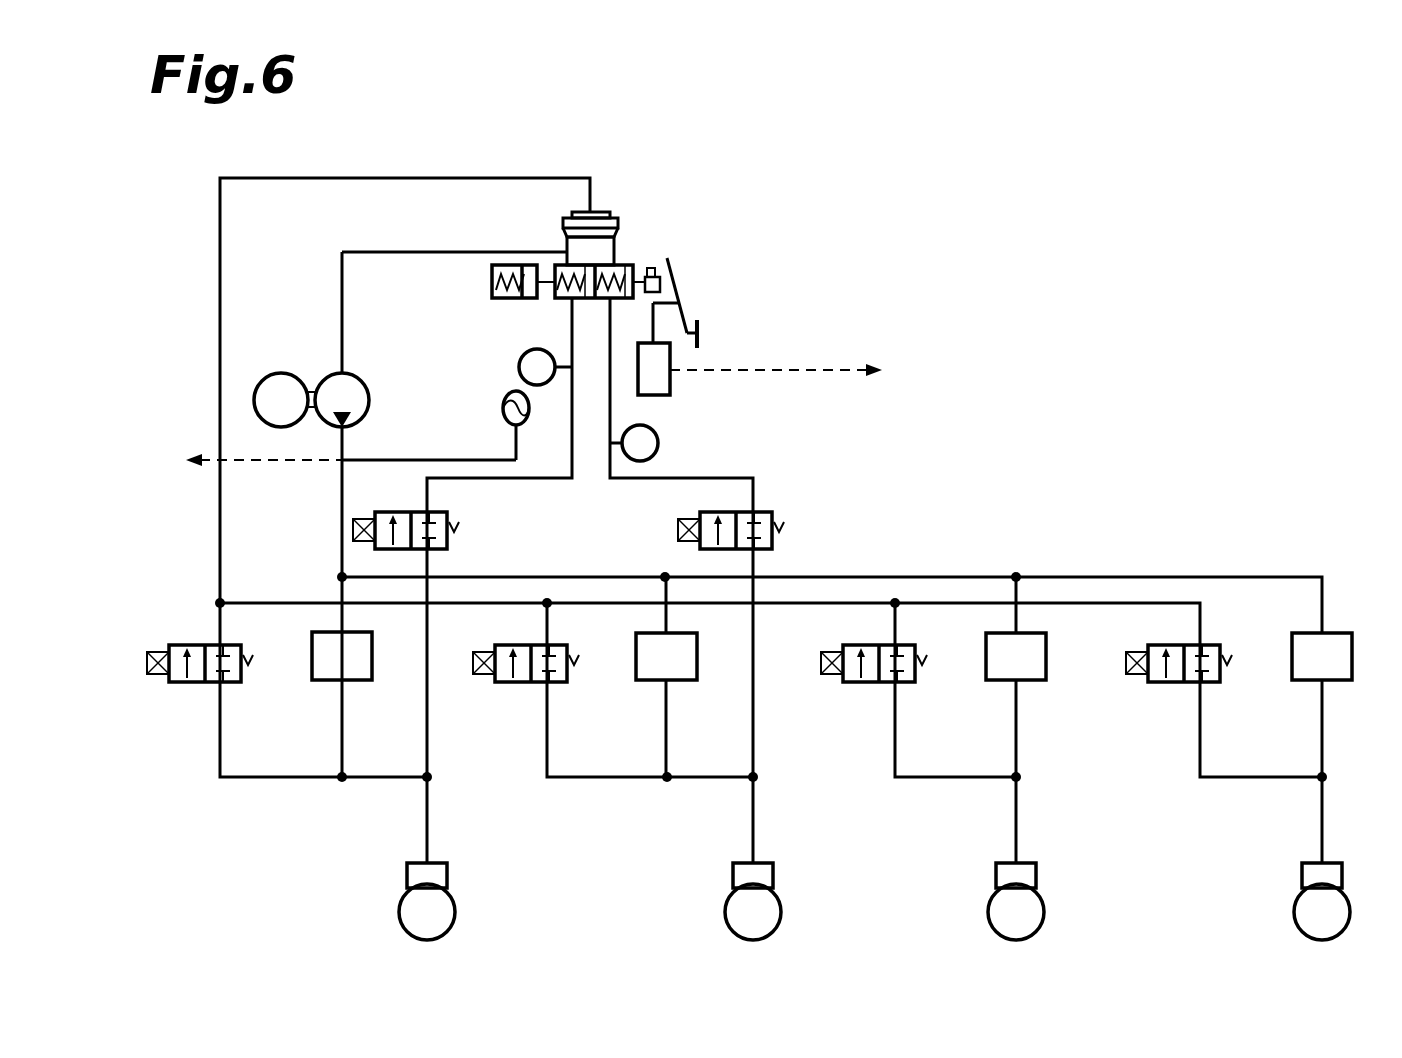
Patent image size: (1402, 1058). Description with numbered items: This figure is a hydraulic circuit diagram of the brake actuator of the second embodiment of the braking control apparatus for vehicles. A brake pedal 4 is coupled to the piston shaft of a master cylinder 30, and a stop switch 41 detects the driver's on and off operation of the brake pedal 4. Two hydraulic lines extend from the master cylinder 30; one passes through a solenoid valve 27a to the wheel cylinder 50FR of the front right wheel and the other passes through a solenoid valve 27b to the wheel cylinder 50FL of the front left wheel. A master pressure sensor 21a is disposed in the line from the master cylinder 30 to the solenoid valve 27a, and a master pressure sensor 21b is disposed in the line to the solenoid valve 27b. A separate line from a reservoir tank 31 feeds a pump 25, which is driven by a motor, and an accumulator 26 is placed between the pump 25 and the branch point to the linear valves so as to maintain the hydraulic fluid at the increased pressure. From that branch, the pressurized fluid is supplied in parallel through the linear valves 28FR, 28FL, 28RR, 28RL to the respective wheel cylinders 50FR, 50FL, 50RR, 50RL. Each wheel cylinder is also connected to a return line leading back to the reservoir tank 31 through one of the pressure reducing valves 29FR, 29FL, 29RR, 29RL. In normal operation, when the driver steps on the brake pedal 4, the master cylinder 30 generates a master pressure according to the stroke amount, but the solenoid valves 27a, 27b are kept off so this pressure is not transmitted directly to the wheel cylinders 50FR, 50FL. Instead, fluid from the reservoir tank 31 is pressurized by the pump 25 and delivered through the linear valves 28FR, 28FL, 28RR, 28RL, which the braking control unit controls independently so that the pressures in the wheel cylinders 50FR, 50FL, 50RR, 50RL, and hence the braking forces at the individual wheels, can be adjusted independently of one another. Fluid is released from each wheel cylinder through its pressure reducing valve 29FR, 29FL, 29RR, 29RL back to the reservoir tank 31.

The brake pedal 4 is at (677, 292).
The master pressure sensor 21a is at (519, 364).
The master pressure sensor 21b is at (658, 443).
The pump 25 is at (314, 390).
The accumulator 26 is at (502, 410).
The solenoid valve 27a is at (447, 518).
The solenoid valve 27b is at (772, 517).
The linear valve 28FR is at (323, 683).
The linear valve 28FL is at (646, 683).
The linear valve 28RR is at (1000, 683).
The linear valve 28RL is at (1302, 683).
The pressure reducing valve 29FR is at (177, 683).
The pressure reducing valve 29FL is at (520, 683).
The pressure reducing valve 29RR is at (868, 683).
The pressure reducing valve 29RL is at (1175, 683).
The master cylinder 30 is at (565, 300).
The reservoir tank 31 is at (618, 222).
The stop switch 41 is at (670, 378).
The wheel cylinder 50FR is at (408, 877).
The wheel cylinder 50FL is at (733, 877).
The wheel cylinder 50RR is at (996, 875).
The wheel cylinder 50RL is at (1302, 878).